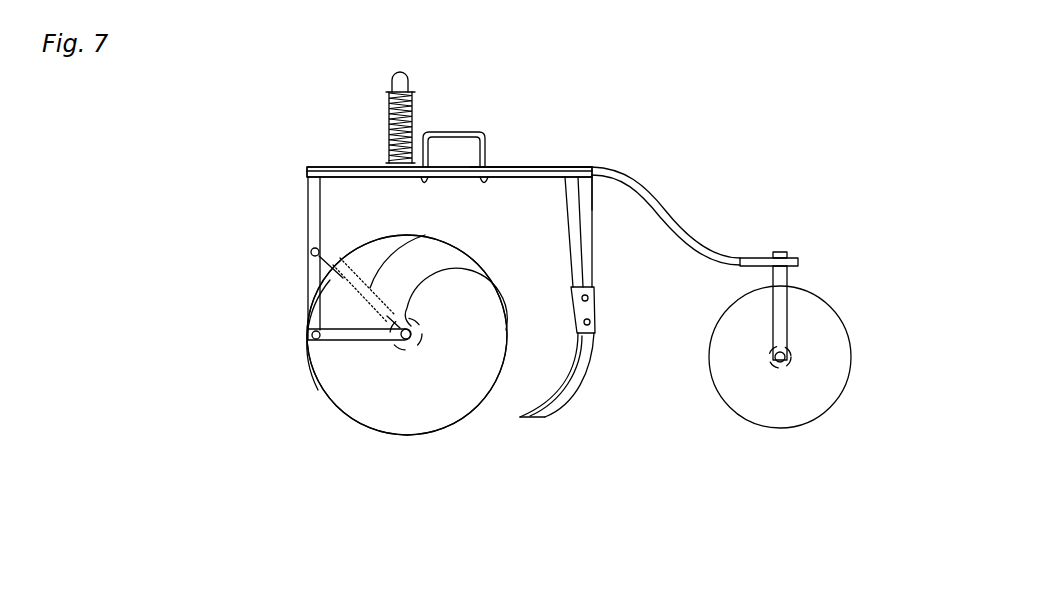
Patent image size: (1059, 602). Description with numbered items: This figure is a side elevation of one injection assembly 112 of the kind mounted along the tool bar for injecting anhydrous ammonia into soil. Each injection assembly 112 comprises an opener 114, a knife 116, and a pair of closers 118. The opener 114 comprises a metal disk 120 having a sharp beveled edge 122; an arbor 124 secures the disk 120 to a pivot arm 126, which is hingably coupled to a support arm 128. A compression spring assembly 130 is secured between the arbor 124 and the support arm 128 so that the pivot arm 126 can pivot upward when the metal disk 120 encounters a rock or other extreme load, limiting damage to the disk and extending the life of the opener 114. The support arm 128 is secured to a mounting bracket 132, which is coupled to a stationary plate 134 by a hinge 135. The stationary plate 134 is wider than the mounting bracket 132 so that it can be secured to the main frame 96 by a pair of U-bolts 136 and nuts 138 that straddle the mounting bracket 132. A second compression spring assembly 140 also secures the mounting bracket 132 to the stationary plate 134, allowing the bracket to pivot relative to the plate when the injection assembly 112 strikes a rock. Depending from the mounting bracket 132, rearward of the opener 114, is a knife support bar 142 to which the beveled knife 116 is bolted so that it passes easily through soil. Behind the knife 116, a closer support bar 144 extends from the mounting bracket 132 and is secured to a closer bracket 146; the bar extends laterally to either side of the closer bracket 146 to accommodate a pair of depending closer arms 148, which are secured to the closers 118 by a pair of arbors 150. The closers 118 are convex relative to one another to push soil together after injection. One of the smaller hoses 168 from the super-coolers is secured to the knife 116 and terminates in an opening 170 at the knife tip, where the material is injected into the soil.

The injection assembly 112 is at (828, 105).
The opener 114 is at (397, 468).
The knife 116 is at (597, 398).
The closers 118 is at (790, 450).
The metal disk 120 is at (363, 418).
The sharp beveled edge 122 is at (318, 390).
The arbor 124 is at (470, 268).
The pivot arm 126 is at (355, 345).
The support arm 128 is at (306, 250).
The compression spring assembly 130 is at (417, 236).
The mounting bracket 132 is at (306, 178).
The stationary plate 134 is at (332, 163).
The hinge 135 is at (594, 167).
The U-bolts 136 is at (468, 130).
The nuts 138 is at (423, 183).
The compression spring assembly 140 is at (370, 117).
The knife support bar 142 is at (593, 203).
The closer support bar 144 is at (687, 217).
The closer bracket 146 is at (792, 257).
The closer arms 148 is at (787, 300).
The arbors 150 is at (787, 362).
The smaller hoses 168 is at (497, 164).
The opening 170 is at (520, 417).
The main frame 96 is at (442, 145).